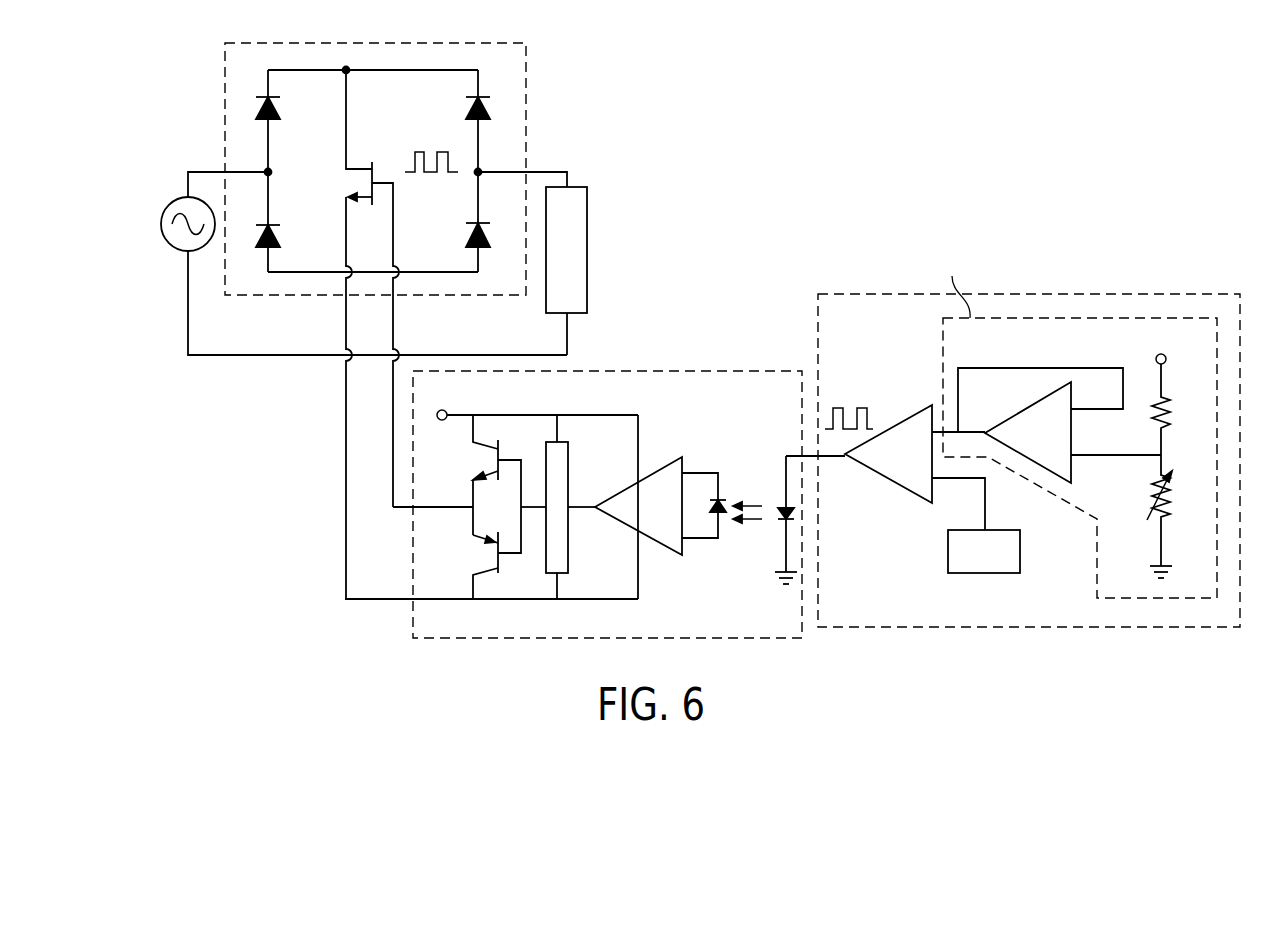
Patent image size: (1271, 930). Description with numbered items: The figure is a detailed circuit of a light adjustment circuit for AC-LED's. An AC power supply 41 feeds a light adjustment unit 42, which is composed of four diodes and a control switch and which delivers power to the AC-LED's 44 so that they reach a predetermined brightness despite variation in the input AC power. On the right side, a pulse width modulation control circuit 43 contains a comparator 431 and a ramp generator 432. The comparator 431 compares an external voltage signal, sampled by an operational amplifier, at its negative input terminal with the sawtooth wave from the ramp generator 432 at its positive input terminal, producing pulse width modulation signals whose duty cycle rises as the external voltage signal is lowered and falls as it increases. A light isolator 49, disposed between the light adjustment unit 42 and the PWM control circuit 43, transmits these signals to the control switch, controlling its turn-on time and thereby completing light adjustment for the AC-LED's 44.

The AC power supply 41 is at (176, 207).
The light adjustment unit 42 is at (526, 72).
The pulse width modulation control circuit 43 is at (1007, 427).
The AC-LED's 44 is at (587, 250).
The light isolator 49 is at (773, 370).
The comparator 431 is at (930, 405).
The ramp generator 432 is at (948, 546).